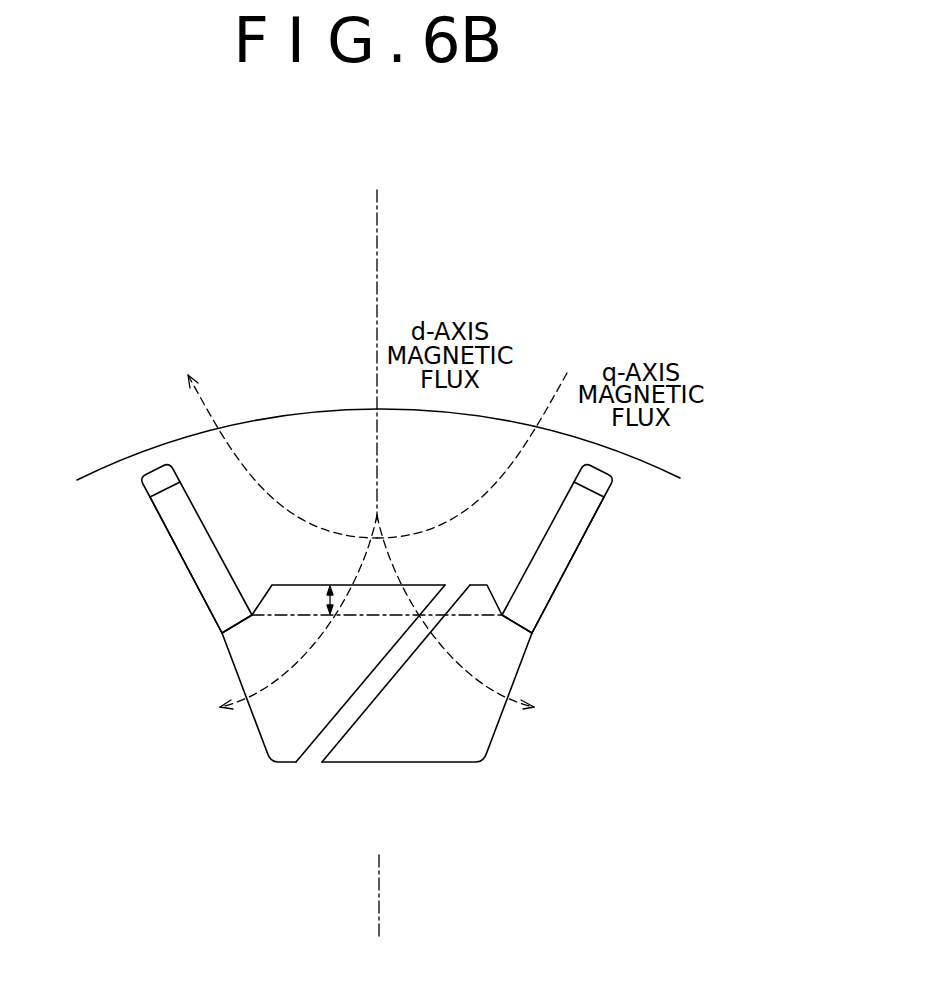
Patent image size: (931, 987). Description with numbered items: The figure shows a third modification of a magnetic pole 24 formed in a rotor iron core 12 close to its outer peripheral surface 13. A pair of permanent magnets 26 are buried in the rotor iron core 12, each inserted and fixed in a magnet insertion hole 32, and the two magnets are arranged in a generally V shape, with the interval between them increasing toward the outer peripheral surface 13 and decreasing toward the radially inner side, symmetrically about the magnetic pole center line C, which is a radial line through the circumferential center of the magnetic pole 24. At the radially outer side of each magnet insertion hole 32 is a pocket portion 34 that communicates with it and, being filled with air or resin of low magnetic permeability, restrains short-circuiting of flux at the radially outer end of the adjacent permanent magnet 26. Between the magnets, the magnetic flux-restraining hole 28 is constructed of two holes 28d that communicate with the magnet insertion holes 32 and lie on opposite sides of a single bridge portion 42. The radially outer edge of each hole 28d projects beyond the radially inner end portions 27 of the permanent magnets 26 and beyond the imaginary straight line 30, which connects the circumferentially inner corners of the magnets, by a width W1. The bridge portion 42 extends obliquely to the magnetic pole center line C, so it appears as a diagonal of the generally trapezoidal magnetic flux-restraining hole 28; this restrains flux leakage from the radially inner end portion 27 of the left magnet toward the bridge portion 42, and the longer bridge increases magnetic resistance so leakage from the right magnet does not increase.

The magnetic pole center line C is at (378, 250).
The rotor iron core 12 is at (263, 415).
The outer peripheral surface 13 is at (344, 409).
The magnetic pole 24 is at (493, 438).
The permanent magnet 26 is at (202, 567).
The radially inner end portion 27 is at (238, 618).
The magnetic flux-restraining hole 28 is at (377, 715).
The hole 28d is at (377, 673).
The imaginary straight line 30 is at (373, 617).
The magnet insertion hole 32 is at (182, 572).
The pocket portion 34 is at (156, 479).
The bridge portion 42 is at (383, 673).
The width W1 is at (329, 588).